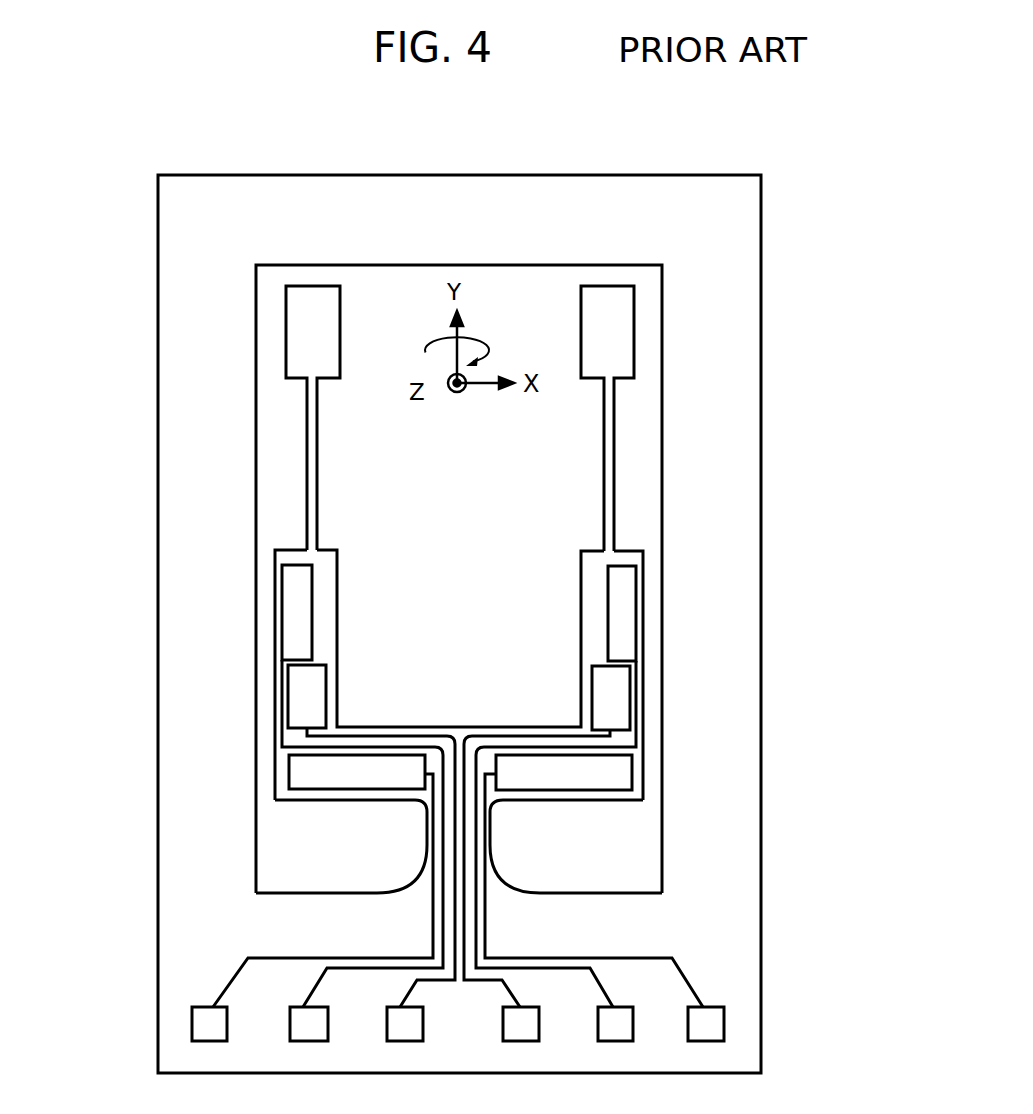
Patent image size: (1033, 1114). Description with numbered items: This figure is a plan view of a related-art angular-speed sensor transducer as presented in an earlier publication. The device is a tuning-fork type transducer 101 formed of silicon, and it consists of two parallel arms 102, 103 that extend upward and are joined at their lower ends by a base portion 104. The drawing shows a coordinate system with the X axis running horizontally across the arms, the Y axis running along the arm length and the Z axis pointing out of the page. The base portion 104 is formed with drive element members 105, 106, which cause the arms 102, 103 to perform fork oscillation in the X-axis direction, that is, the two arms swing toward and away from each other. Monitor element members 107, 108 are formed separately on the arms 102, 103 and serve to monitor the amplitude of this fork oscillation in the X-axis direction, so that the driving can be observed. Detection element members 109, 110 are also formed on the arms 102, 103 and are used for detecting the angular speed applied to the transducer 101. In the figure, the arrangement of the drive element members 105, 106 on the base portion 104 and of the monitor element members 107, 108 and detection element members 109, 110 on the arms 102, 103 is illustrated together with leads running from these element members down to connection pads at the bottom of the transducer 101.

The tuning-fork type transducer 101 is at (638, 467).
The arm 102 is at (273, 558).
The arm 103 is at (645, 560).
The base portion 104 is at (628, 802).
The drive element member 105 is at (312, 776).
The drive element member 106 is at (620, 773).
The monitor element member 107 is at (297, 610).
The monitor element member 108 is at (627, 612).
The detection element member 109 is at (307, 697).
The detection element member 110 is at (617, 705).